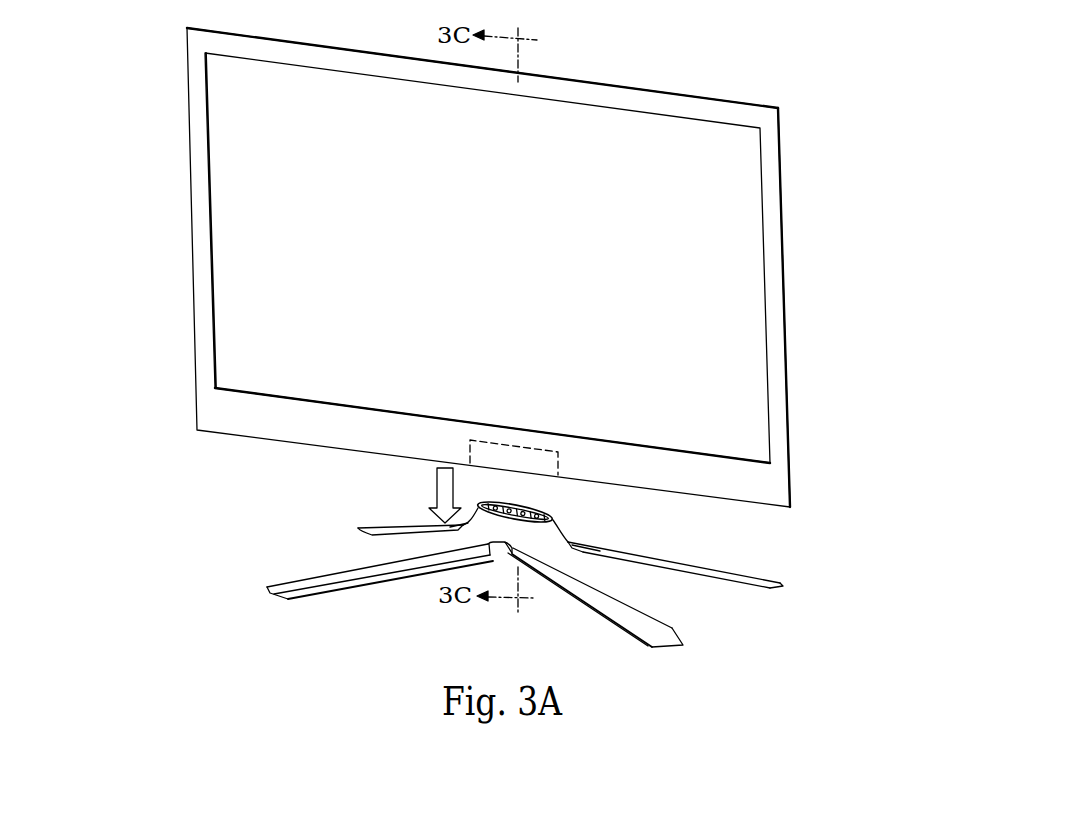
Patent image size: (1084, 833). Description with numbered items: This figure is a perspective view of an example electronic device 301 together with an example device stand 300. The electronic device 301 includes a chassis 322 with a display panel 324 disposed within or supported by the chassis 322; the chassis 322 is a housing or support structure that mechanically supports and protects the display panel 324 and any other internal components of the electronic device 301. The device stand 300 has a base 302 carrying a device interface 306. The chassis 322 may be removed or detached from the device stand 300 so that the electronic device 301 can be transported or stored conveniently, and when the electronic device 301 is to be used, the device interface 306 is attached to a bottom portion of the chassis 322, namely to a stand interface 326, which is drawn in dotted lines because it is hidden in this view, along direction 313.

The electronic device 301 is at (869, 99).
The chassis 322 is at (190, 202).
The display panel 324 is at (358, 187).
The stand interface 326 is at (543, 452).
The direction 313 is at (437, 497).
The device stand 300 is at (328, 540).
The base 302 is at (530, 533).
The device interface 306 is at (552, 497).